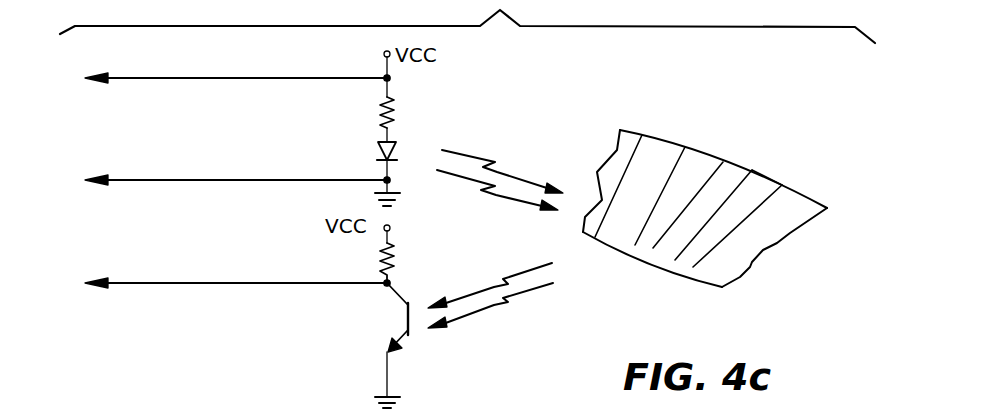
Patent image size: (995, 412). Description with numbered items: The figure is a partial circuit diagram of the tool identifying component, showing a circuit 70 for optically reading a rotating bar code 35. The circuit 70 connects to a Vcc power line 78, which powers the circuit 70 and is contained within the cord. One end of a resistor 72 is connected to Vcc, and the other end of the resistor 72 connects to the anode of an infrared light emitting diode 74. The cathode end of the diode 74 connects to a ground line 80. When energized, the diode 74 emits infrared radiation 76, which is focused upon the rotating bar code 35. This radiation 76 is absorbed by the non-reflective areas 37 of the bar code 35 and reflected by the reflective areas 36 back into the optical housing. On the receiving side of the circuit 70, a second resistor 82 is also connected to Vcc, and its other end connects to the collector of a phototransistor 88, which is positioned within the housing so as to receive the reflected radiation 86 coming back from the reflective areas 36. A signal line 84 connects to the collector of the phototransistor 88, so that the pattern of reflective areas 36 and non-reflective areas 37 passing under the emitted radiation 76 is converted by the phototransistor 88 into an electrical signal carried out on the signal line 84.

The bar code 35 is at (642, 130).
The reflective areas 36 is at (693, 157).
The non-reflective areas 37 is at (743, 163).
The circuit 70 is at (310, 340).
The resistor 72 is at (395, 104).
The infrared light emitting diode 74 is at (396, 150).
The infrared radiation 76 is at (493, 165).
The Vcc power line 78 is at (188, 78).
The ground line 80 is at (167, 180).
The resistor 82 is at (392, 258).
The signal line 84 is at (212, 283).
The reflected radiation 86 is at (503, 312).
The phototransistor 88 is at (412, 325).